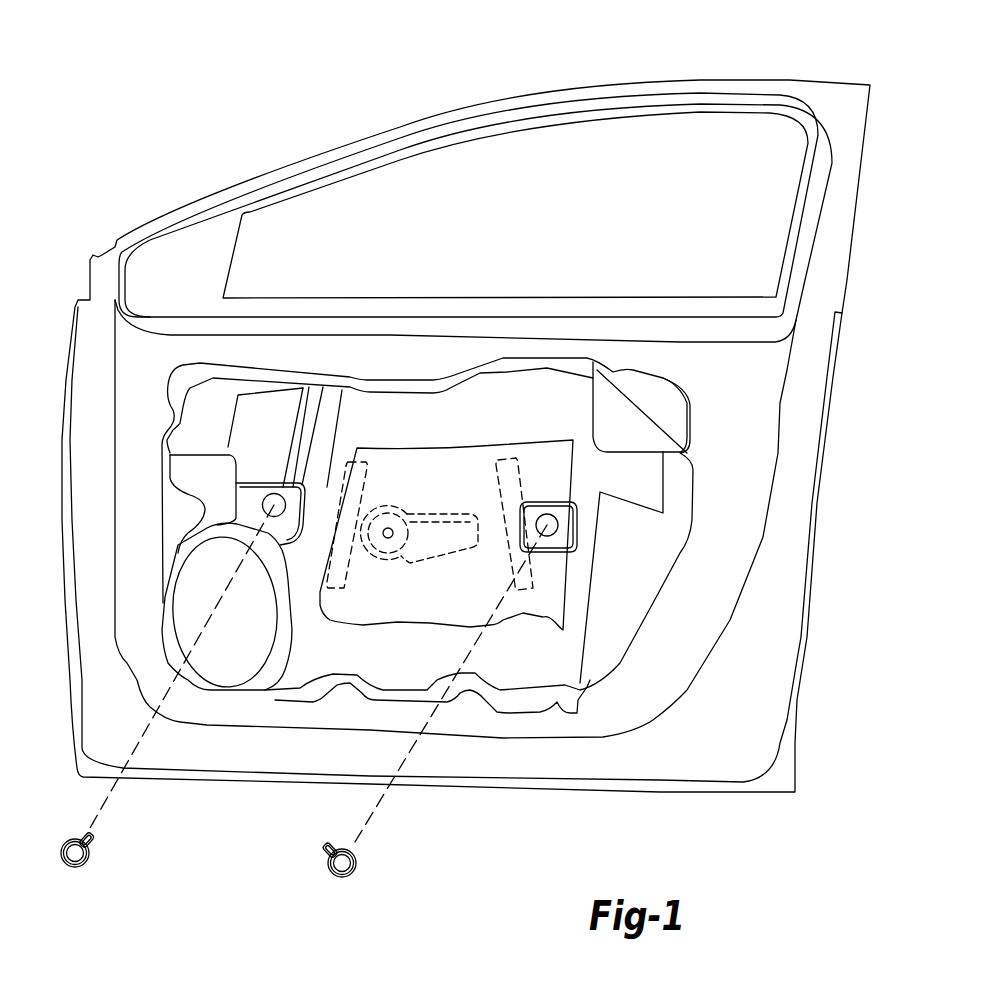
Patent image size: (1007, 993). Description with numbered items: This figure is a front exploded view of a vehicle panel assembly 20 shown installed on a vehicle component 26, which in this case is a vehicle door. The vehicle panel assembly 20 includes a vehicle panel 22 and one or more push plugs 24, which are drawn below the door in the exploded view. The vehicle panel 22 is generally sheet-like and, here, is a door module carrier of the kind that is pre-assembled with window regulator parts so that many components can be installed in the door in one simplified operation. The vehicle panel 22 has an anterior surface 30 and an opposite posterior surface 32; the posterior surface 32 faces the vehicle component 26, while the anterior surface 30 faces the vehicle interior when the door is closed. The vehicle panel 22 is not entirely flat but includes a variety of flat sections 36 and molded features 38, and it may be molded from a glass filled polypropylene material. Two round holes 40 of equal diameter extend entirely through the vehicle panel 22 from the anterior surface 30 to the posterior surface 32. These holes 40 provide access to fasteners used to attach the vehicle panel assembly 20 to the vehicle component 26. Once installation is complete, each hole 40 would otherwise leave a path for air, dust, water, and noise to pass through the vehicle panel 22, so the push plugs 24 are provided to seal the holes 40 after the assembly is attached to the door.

The vehicle panel assembly 20 is at (331, 78).
The vehicle panel 22 is at (240, 702).
The push plugs 24 is at (90, 876).
The vehicle component 26 is at (390, 633).
The anterior surface 30 is at (547, 400).
The posterior surface 32 is at (643, 437).
The flat sections 36 is at (373, 423).
The molded features 38 is at (170, 637).
The hole 40 is at (263, 498).